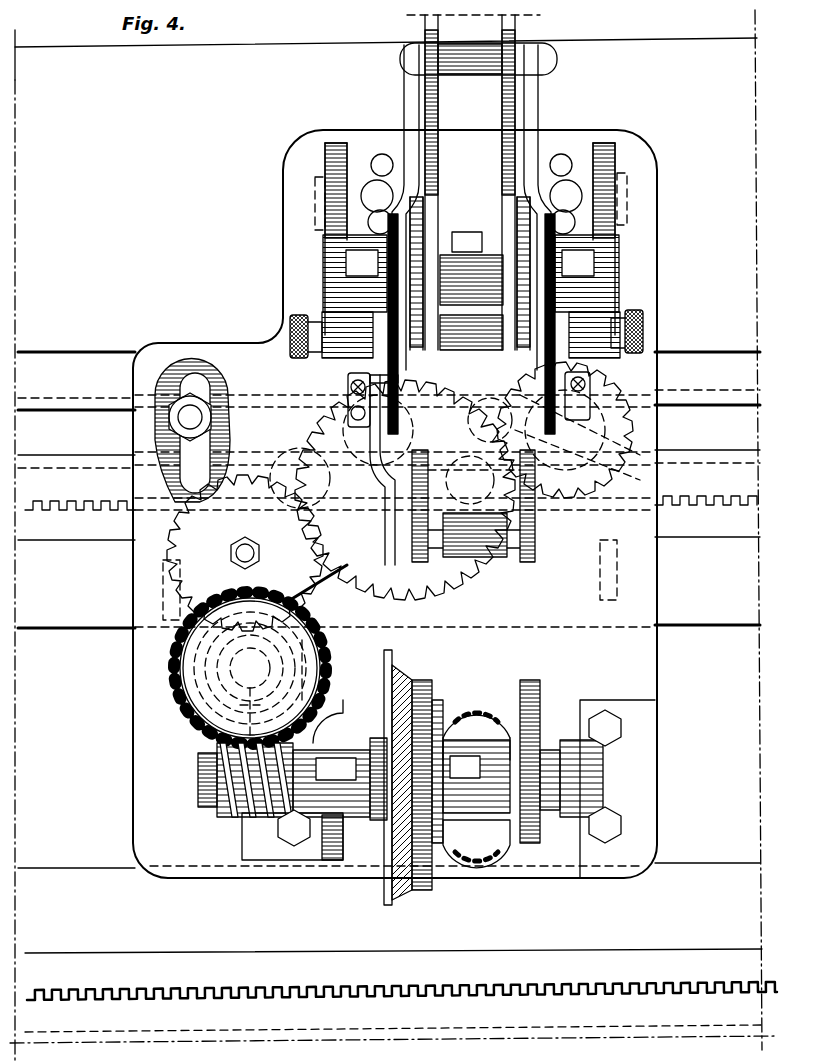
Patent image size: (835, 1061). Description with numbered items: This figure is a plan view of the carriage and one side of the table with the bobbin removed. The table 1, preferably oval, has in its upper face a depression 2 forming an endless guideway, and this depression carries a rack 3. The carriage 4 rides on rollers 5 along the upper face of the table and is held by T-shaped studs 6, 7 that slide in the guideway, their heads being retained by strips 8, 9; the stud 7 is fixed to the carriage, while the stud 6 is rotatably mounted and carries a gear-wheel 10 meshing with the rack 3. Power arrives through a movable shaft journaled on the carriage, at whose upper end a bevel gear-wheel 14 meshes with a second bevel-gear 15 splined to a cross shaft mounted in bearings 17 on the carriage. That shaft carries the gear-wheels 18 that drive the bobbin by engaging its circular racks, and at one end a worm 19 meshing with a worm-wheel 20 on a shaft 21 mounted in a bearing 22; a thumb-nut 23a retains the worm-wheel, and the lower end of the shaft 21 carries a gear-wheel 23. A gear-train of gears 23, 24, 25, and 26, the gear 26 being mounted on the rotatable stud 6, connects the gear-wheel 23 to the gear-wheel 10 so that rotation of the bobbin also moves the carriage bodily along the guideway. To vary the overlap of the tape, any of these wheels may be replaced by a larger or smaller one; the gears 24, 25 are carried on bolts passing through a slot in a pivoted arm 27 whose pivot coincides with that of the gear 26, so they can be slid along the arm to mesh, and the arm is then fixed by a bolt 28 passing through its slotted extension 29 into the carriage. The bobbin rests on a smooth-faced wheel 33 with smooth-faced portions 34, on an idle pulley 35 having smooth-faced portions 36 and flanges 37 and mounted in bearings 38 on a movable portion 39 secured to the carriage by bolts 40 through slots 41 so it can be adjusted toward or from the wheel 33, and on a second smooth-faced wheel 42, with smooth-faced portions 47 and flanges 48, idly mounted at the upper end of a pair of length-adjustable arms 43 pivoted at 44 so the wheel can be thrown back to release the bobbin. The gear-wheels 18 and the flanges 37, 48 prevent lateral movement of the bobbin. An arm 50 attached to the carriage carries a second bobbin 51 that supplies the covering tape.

The table 1 is at (392, 535).
The depression 2 is at (389, 430).
The rack 3 is at (397, 748).
The carriage 4 is at (389, 504).
The rollers 5 is at (315, 207).
The T-shaped stud 6 is at (565, 430).
The T-shaped stud 7 is at (405, 490).
The strip 8 is at (389, 375).
The strip 9 is at (389, 477).
The gear-wheel 10 is at (515, 395).
The bevel gear-wheel 14 is at (476, 842).
The second bevel-gear 15 is at (400, 672).
The bearings 17 is at (612, 768).
The gear-wheels 18 is at (424, 880).
The worm 19 is at (250, 772).
The worm-wheel 20 is at (184, 690).
The shaft 21 is at (232, 668).
The bearing 22 is at (195, 686).
The gear-wheel 23 is at (310, 657).
The thumb-nut 23a is at (200, 705).
The gear 24 is at (257, 553).
The gear 25 is at (405, 430).
The gear 26 is at (600, 385).
The pivoted arm 27 is at (298, 482).
The bolt 28 is at (190, 418).
The slotted extension 29 is at (160, 383).
The wheel 33 is at (476, 776).
The smooth-faced portions 34 is at (476, 736).
The idle pulley 35 is at (462, 268).
The smooth-faced portions 36 is at (500, 325).
The flanges 37 is at (423, 205).
The bearings 38 is at (471, 296).
The movable portion 39 is at (473, 182).
The bolts 40 is at (372, 190).
The slots 41 is at (382, 154).
The second smooth-faced wheel 42 is at (470, 592).
The arms 43 is at (372, 470).
The pivot 44 is at (325, 290).
The smooth-faced portions 47 is at (475, 575).
The flanges 48 is at (412, 572).
The arm 50 is at (404, 97).
The second bobbin 51 is at (470, 60).